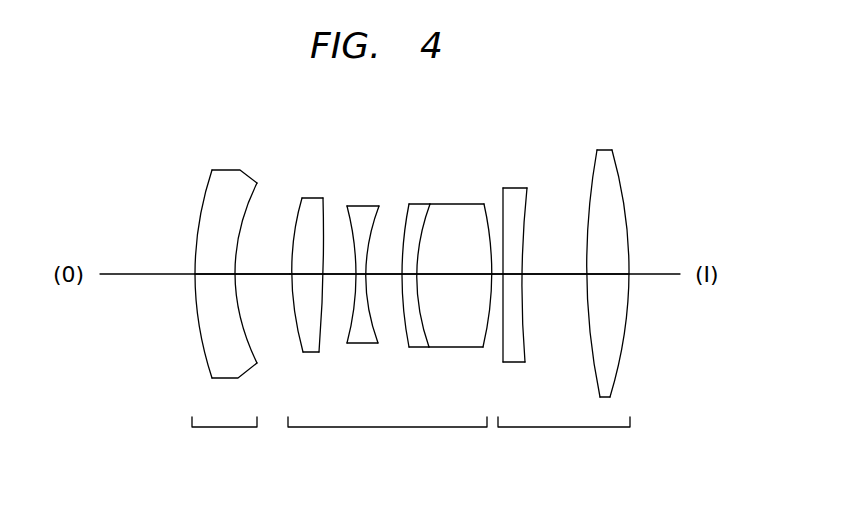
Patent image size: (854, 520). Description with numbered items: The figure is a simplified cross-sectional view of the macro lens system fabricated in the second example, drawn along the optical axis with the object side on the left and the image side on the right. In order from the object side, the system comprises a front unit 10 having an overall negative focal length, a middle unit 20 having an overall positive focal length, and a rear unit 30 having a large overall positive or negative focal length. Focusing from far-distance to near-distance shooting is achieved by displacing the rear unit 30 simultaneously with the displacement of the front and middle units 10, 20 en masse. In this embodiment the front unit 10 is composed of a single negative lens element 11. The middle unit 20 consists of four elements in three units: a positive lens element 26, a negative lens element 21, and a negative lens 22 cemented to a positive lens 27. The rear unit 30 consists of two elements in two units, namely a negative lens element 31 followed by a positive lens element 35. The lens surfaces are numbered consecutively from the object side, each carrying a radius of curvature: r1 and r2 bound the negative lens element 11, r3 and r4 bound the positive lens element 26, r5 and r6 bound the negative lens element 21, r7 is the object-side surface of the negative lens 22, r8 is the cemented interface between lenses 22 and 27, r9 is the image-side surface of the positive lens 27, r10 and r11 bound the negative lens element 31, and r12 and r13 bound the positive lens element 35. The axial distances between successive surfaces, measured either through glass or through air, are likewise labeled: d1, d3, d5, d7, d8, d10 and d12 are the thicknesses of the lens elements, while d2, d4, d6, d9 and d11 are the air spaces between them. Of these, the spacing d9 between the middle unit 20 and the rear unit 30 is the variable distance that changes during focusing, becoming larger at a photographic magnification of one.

The front unit 10 is at (220, 447).
The negative lens element 11 is at (213, 253).
The middle unit 20 is at (387, 447).
The negative lens element 21 is at (358, 249).
The negative lens 22 is at (427, 249).
The positive lens element 26 is at (294, 249).
The positive lens 27 is at (454, 249).
The rear unit 30 is at (564, 447).
The negative lens element 31 is at (525, 252).
The positive lens element 35 is at (612, 256).
The radius of curvature of lens plane 1 r1 is at (212, 170).
The radius of curvature of lens plane 2 r2 is at (257, 183).
The radius of curvature of lens plane 3 r3 is at (302, 198).
The radius of curvature of lens plane 4 r4 is at (323, 198).
The radius of curvature of lens plane 5 r5 is at (348, 206).
The radius of curvature of lens plane 6 r6 is at (379, 206).
The radius of curvature of lens plane 7 r7 is at (409, 204).
The radius of curvature of lens plane 8 r8 is at (430, 204).
The radius of curvature of lens plane 9 r9 is at (484, 204).
The radius of curvature of lens plane 10 r10 is at (503, 188).
The radius of curvature of lens plane 11 r11 is at (527, 188).
The radius of curvature of lens plane 12 r12 is at (597, 150).
The radius of curvature of lens plane 13 r13 is at (612, 150).
The distance between plane 1 and plane 2 d1 is at (199, 242).
The distance between plane 2 and plane 3 d2 is at (266, 274).
The distance between plane 3 and plane 4 d3 is at (290, 290).
The distance between plane 4 and plane 5 d4 is at (340, 276).
The distance between plane 5 and plane 6 d5 is at (348, 258).
The distance between plane 6 and plane 7 d6 is at (388, 276).
The distance between plane 7 and plane 8 d7 is at (410, 276).
The distance between plane 8 and plane 9 d8 is at (454, 256).
The distance between plane 9 and plane 10 d9 is at (498, 274).
The distance between plane 10 and plane 11 d10 is at (512, 276).
The distance between plane 11 and plane 12 d11 is at (556, 274).
The distance between plane 12 and plane 13 d12 is at (607, 276).